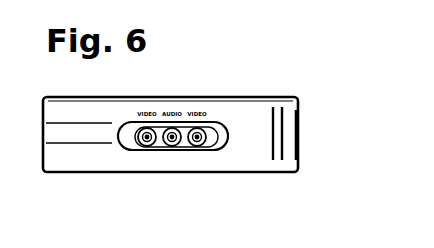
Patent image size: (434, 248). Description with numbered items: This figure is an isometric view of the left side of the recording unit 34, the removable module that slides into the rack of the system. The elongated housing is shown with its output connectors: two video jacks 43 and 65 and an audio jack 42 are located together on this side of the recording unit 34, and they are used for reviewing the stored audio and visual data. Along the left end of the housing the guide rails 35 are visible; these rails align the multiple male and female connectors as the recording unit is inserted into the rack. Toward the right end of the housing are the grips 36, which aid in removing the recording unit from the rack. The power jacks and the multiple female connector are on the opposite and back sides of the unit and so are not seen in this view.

The recording unit 34 is at (310, 128).
The guide rails 35 is at (68, 139).
The grips 36 is at (283, 150).
The audio jack 42 is at (172, 148).
The video jack 43 is at (197, 148).
The video jack 65 is at (147, 148).